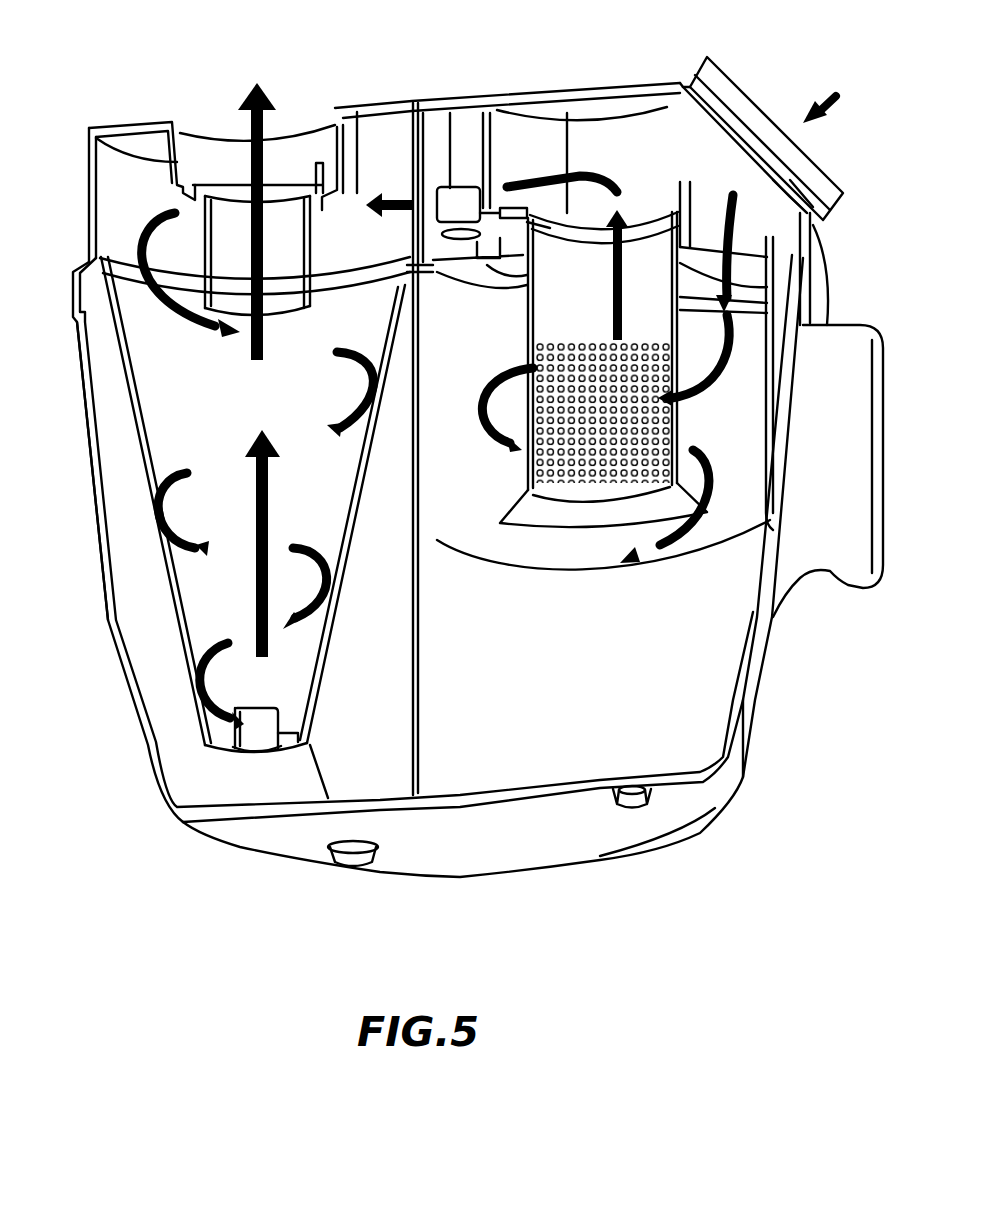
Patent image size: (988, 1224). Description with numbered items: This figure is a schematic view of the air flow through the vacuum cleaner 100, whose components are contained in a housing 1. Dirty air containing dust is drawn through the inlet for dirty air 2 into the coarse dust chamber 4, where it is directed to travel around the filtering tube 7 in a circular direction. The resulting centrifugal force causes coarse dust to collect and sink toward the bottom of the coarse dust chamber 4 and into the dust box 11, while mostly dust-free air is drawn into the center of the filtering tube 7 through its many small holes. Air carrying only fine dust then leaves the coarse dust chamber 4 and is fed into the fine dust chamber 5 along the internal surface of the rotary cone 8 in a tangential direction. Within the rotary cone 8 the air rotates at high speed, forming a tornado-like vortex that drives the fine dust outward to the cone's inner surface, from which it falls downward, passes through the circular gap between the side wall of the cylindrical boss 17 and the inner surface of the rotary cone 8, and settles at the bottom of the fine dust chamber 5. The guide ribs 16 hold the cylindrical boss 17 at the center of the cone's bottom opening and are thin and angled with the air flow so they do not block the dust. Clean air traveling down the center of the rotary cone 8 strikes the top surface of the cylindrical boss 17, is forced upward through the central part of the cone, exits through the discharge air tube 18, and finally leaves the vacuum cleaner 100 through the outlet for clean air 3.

The vacuum cleaner 100 is at (513, 62).
The housing 1 is at (777, 663).
The inlet for dirty air 2 is at (730, 130).
The outlet for clean air 3 is at (288, 160).
The coarse dust chamber 4 is at (703, 743).
The fine dust chamber 5 is at (157, 713).
The filtering tube 7 is at (660, 421).
The rotary cone 8 is at (167, 578).
The dust box 11 is at (85, 457).
The guide ribs 16 is at (290, 760).
The cylindrical boss 17 is at (245, 760).
The discharge air tube 18 is at (197, 240).